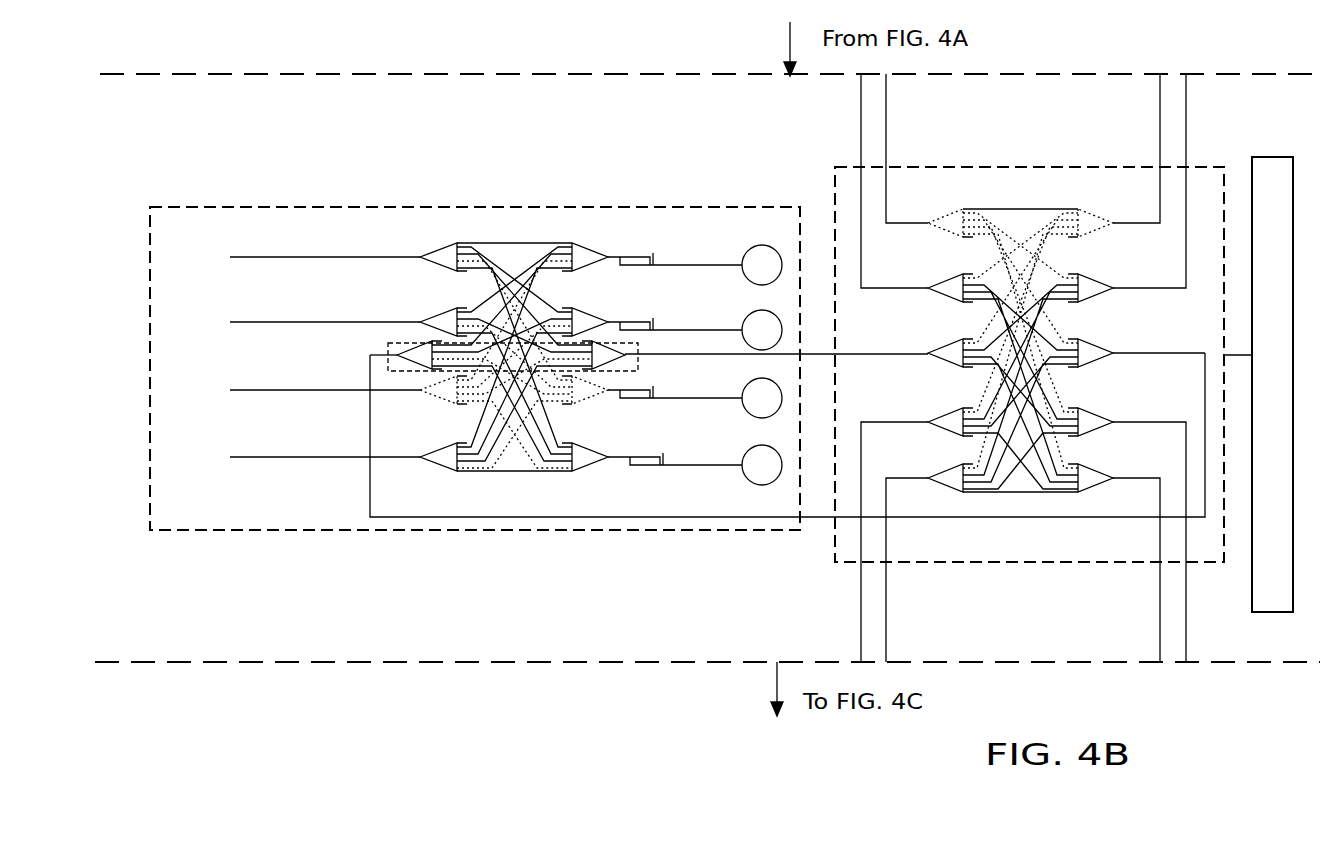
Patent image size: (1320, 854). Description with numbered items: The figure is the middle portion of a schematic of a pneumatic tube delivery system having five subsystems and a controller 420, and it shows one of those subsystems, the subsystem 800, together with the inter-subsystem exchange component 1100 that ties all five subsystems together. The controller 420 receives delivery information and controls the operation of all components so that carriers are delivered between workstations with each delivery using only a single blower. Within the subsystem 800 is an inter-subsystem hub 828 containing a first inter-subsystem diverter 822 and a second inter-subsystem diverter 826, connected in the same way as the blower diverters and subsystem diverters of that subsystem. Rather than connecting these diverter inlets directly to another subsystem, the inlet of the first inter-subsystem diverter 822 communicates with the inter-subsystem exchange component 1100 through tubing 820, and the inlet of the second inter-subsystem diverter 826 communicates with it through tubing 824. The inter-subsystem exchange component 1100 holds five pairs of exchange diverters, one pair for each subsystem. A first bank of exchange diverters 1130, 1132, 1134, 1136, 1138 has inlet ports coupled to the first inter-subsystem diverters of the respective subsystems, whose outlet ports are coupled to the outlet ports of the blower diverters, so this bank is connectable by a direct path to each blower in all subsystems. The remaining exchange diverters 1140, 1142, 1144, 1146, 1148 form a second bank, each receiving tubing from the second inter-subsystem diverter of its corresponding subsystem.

The subsystem 800 is at (150, 257).
The tubing 820 is at (652, 517).
The first inter-subsystem diverter 822 is at (600, 357).
The tubing 824 is at (660, 354).
The second inter-subsystem diverter 826 is at (418, 362).
The inter-subsystem hub 828 is at (410, 343).
The inter-subsystem exchange component 1100 is at (985, 167).
The controller 420 is at (1268, 157).
The exchange diverter 1130 is at (955, 226).
The exchange diverter 1132 is at (955, 291).
The exchange diverter 1134 is at (955, 356).
The exchange diverter 1136 is at (955, 425).
The exchange diverter 1138 is at (955, 481).
The exchange diverter 1140 is at (1088, 226).
The exchange diverter 1142 is at (1088, 291).
The exchange diverter 1144 is at (1088, 356).
The exchange diverter 1146 is at (1088, 425).
The exchange diverter 1148 is at (1088, 481).